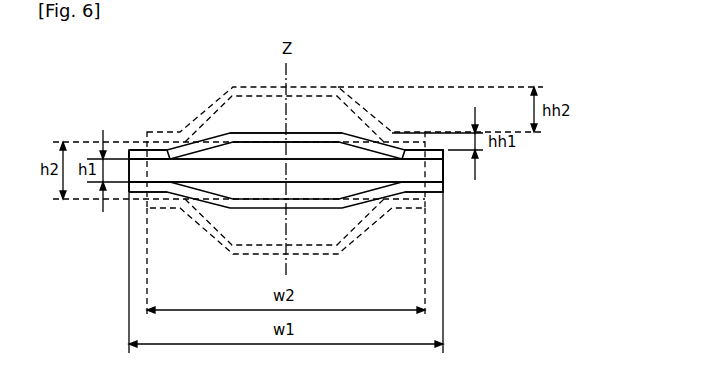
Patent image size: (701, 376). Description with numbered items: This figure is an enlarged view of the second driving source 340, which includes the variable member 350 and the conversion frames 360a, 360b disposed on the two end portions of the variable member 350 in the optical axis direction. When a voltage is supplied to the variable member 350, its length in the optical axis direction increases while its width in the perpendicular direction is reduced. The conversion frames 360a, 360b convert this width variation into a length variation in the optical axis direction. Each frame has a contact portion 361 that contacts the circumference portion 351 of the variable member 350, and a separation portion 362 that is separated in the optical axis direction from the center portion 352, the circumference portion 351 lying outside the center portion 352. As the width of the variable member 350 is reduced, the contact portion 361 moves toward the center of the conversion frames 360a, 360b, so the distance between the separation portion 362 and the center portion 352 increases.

The second driving source 340 is at (529, 48).
The variable member 350 is at (448, 178).
The circumference portion 351 is at (418, 178).
The center portion 352 is at (155, 175).
The conversion frame 360a is at (131, 152).
The conversion frame 360b is at (130, 193).
The contact portion 361 is at (157, 150).
The separation portion 362 is at (247, 142).